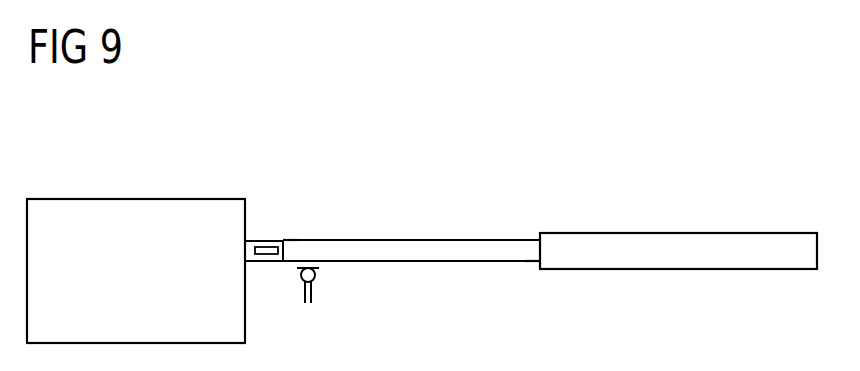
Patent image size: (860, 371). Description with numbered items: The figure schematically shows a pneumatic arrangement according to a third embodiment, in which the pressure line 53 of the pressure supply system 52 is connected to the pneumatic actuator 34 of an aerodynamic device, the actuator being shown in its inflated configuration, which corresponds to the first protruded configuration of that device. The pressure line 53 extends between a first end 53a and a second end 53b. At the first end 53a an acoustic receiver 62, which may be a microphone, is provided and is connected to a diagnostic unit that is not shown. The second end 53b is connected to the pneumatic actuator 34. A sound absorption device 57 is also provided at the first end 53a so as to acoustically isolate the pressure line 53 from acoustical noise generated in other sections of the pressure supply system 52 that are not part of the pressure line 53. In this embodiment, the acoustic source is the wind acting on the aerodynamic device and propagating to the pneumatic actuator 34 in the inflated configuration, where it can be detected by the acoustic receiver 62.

The pressure supply system 52 is at (131, 189).
The sound absorption device 57 is at (268, 257).
The pressure line 53 is at (408, 239).
The first end 53a is at (287, 250).
The second end 53b is at (540, 263).
The pneumatic actuator 34 is at (677, 232).
The acoustic receiver 62 is at (316, 274).